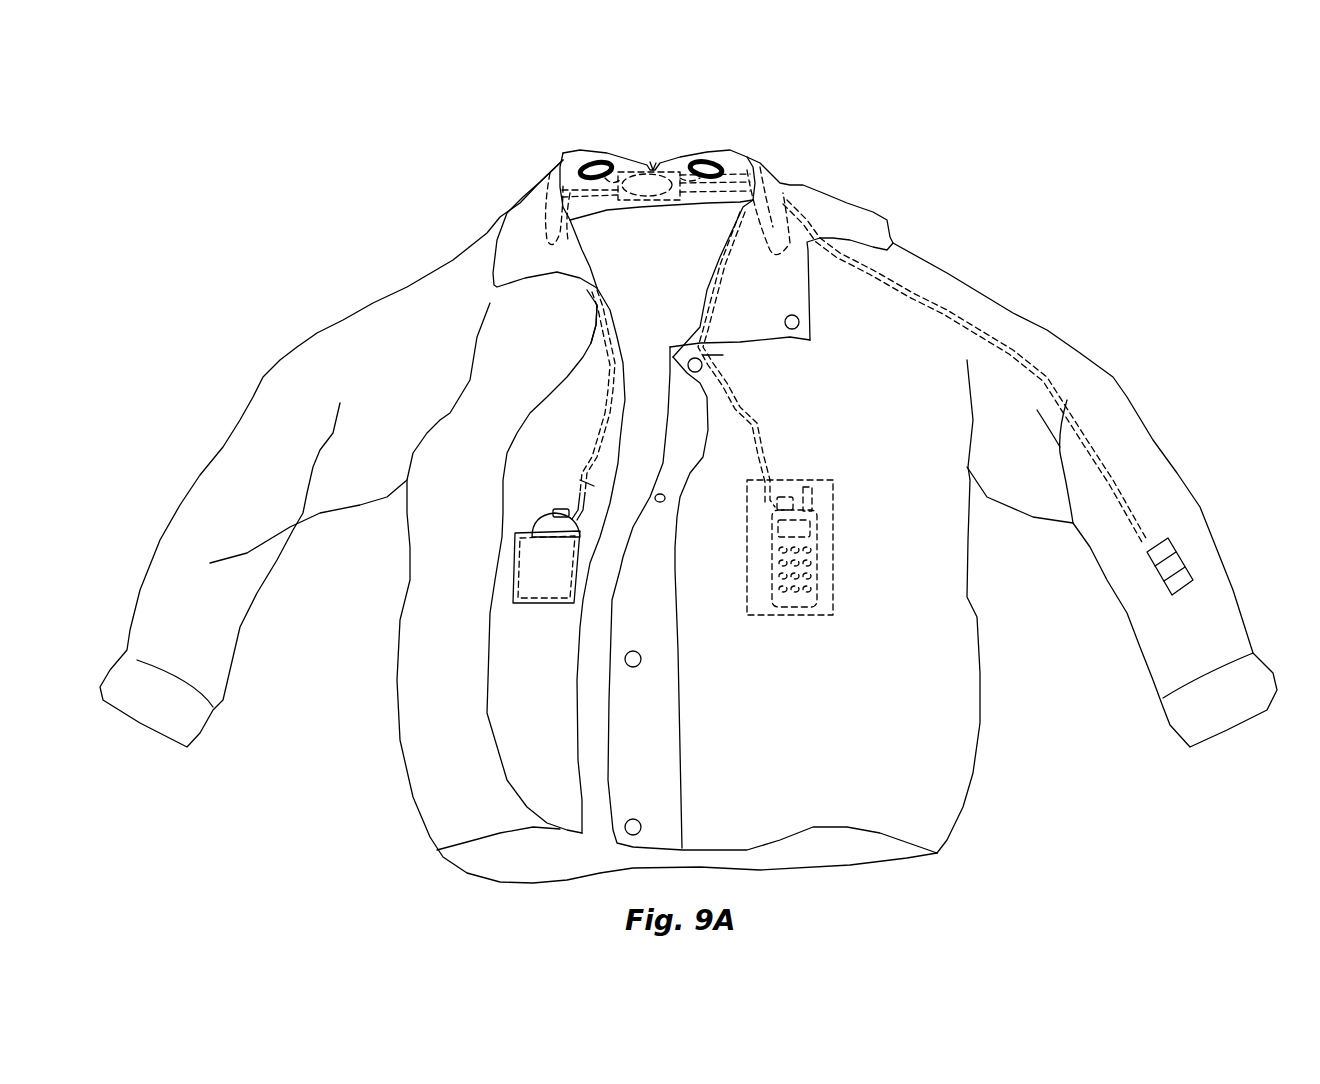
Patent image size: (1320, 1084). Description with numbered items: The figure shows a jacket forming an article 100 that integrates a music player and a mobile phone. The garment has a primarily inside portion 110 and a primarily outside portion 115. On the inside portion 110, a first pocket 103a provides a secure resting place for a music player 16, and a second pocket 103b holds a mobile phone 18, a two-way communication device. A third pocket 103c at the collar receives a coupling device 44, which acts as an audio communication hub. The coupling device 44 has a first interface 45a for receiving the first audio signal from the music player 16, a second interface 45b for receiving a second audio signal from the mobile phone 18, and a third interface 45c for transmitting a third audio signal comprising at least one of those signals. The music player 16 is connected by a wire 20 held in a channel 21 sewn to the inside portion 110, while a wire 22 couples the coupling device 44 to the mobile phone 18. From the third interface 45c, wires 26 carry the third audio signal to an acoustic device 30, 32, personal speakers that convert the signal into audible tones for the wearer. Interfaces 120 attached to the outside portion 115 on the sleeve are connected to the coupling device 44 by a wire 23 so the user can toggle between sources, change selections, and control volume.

The article 100 is at (1022, 160).
The acoustic device 30 is at (565, 152).
The acoustic device 32 is at (713, 152).
The wires 26 is at (630, 157).
The first interface 45a is at (620, 175).
The second interface 45b is at (682, 173).
The third interface 45c is at (653, 167).
The coupling device 44 is at (650, 190).
The third pocket 103c is at (680, 205).
The wire 20 is at (617, 367).
The channel 21 is at (590, 453).
The music player 16 is at (550, 520).
The first pocket 103a is at (533, 587).
The wire 22 is at (773, 453).
The mobile phone 18 is at (813, 550).
The second pocket 103b is at (827, 610).
The wire 23 is at (1033, 360).
The interfaces 120 is at (1185, 549).
The outside portion 115 is at (445, 738).
The inside portion 110 is at (596, 766).